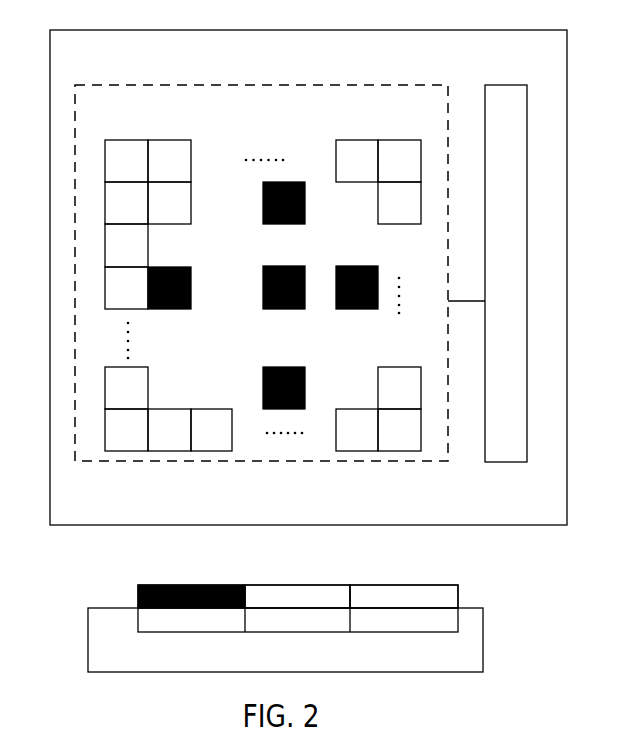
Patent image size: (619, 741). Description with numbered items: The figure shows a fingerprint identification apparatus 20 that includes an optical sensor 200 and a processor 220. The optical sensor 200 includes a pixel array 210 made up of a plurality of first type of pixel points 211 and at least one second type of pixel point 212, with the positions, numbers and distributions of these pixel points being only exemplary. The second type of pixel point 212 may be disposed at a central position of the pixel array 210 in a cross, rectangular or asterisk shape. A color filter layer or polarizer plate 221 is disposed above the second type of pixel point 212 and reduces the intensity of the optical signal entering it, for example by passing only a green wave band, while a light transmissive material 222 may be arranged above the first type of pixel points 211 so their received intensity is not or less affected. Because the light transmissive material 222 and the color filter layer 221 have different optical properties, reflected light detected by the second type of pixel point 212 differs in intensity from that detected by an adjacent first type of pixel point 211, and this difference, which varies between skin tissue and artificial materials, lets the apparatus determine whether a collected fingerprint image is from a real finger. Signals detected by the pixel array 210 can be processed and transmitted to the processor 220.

The fingerprint identification apparatus 20 is at (276, 26).
The optical sensor 200 is at (483, 646).
The pixel array 210 is at (253, 85).
The first type of pixel points 211 is at (128, 140).
The second type of pixel point 212 is at (283, 310).
The processor 220 is at (487, 273).
The color filter layer or polarizer plate 221 is at (191, 597).
The light transmissive material 222 is at (351, 597).